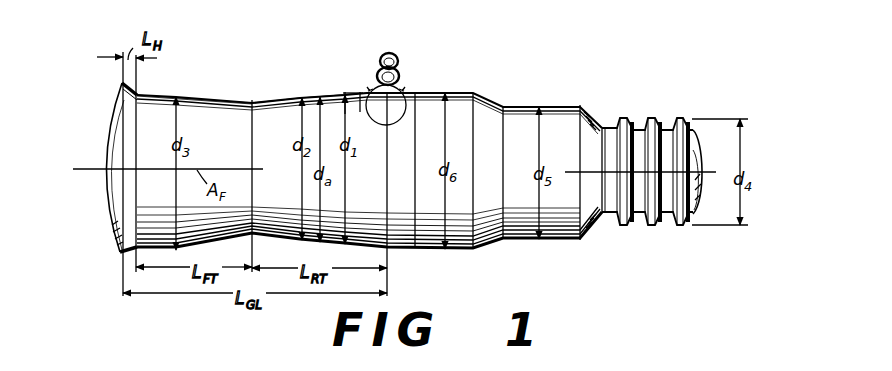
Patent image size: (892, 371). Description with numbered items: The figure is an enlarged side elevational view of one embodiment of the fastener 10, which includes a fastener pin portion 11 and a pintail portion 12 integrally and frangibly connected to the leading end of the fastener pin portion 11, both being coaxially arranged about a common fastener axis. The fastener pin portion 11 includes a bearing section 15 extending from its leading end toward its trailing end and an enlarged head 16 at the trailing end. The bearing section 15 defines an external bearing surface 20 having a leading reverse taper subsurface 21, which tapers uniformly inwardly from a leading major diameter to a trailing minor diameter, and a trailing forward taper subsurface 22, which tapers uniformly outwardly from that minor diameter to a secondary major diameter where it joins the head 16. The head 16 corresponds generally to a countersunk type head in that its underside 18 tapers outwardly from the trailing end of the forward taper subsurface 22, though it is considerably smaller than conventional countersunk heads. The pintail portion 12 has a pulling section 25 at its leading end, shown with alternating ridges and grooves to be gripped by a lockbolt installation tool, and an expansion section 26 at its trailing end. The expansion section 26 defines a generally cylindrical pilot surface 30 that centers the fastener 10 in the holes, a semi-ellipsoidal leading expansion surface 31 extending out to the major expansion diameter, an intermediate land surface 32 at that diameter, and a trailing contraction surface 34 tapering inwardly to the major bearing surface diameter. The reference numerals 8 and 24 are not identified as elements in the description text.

The sighting marker knot 8 is at (386, 89).
The fastener 10 is at (442, 72).
The fastener pin portion 11 is at (215, 66).
The pintail portion 12 is at (589, 100).
The bearing section 15 is at (229, 112).
The enlarged head 16 is at (110, 185).
The underside of the head 18 is at (136, 93).
The bearing surface 20 is at (311, 96).
The leading reverse taper subsurface 21 is at (361, 110).
The trailing forward taper subsurface 22 is at (194, 110).
The transition region 24 is at (256, 103).
The pulling section 25 is at (703, 112).
The expansion section 26 is at (529, 93).
The pilot surface 30 is at (558, 241).
The leading expansion surface 31 is at (493, 247).
The intermediate land surface 32 is at (457, 250).
The trailing contraction surface 34 is at (400, 250).